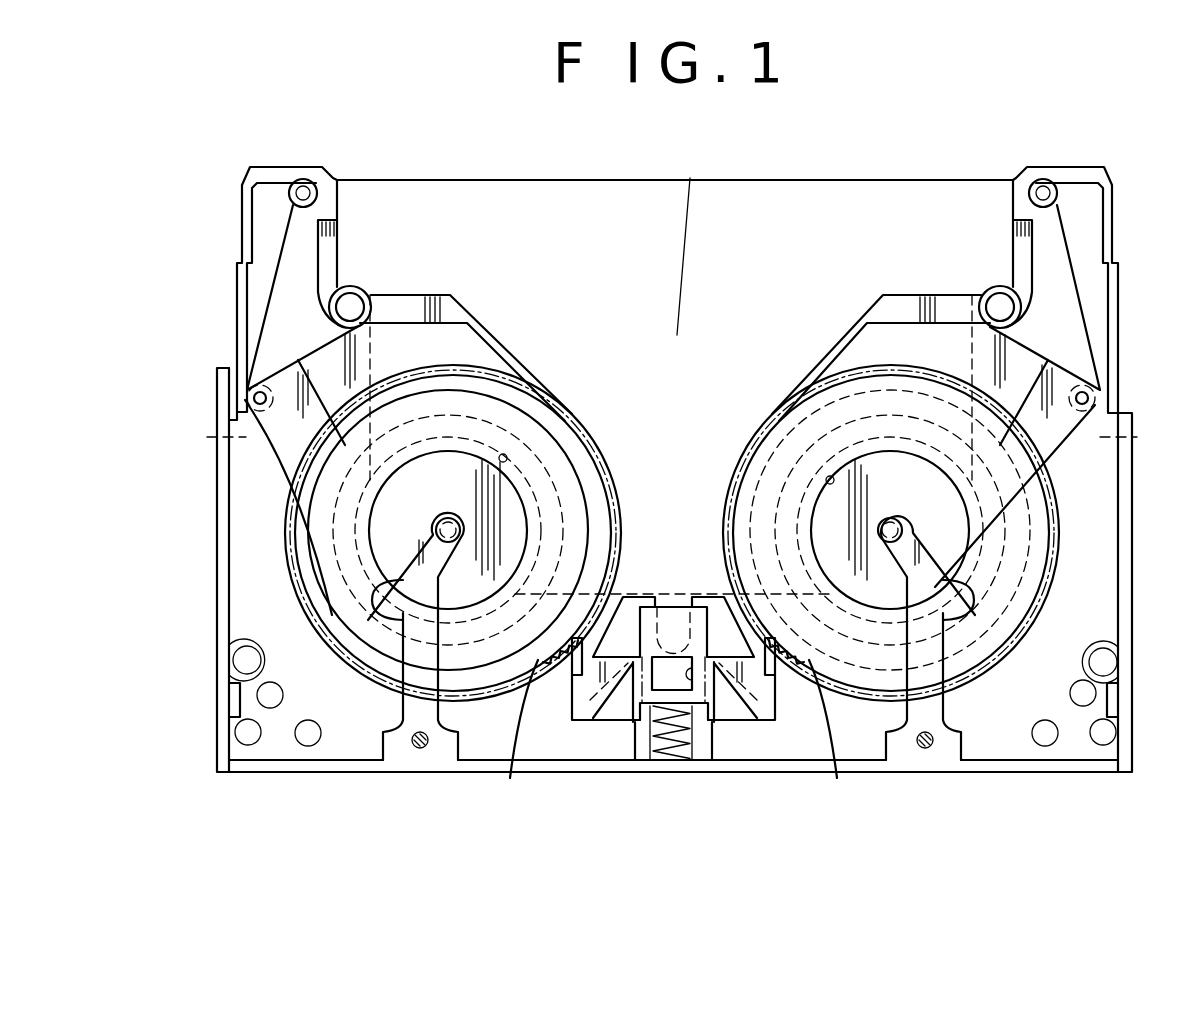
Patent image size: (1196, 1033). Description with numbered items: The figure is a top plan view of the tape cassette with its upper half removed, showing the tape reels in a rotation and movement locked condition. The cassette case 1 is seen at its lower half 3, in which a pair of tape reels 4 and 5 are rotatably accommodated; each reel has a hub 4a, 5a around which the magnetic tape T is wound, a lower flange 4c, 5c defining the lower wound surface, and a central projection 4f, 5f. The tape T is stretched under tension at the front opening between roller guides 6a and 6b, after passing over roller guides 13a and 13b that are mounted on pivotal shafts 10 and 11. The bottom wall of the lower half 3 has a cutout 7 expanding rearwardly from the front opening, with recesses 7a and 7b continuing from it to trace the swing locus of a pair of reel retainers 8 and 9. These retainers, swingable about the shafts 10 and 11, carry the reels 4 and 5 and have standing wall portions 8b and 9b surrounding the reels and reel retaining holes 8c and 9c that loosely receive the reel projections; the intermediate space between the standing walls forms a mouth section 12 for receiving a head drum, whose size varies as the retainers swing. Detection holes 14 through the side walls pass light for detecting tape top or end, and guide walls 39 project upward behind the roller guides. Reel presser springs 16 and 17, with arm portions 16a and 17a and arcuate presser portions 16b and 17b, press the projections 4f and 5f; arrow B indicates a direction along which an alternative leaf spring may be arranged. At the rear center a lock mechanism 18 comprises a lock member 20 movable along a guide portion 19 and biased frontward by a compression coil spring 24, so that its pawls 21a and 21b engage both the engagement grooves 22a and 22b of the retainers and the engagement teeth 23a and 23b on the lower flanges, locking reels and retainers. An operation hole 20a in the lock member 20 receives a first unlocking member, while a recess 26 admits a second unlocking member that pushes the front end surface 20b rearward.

The cassette case 1 is at (1103, 772).
The lower half 3 is at (300, 773).
The tape reel 4 is at (300, 577).
The hub 4a is at (297, 490).
The lower flange 4c is at (327, 613).
The central projection 4f is at (433, 532).
The tape reel 5 is at (1040, 580).
The hub 5a is at (990, 478).
The lower flange 5c is at (1010, 607).
The central projection 5f is at (905, 532).
The roller guide 6a is at (303, 180).
The roller guide 6b is at (1043, 180).
The cutout 7 is at (372, 347).
The recess 7a is at (478, 648).
The recess 7b is at (868, 615).
The reel retainer 8 is at (578, 405).
The standing wall portion 8b is at (490, 330).
The reel retaining hole 8c is at (505, 455).
The reel retainer 9 is at (762, 410).
The standing wall portion 9b is at (862, 320).
The reel retaining hole 9c is at (830, 478).
The pivotal shaft 10 is at (250, 397).
The pivotal shaft 11 is at (1090, 397).
The mouth section 12 is at (691, 241).
The roller guide 13a is at (203, 437).
The roller guide 13b is at (1141, 437).
The detection holes 14 is at (236, 334).
The reel presser spring 16 is at (410, 655).
The arm portion 16a is at (383, 680).
The presser portion 16b is at (417, 559).
The reel presser spring 17 is at (945, 648).
The arm portion 17a is at (960, 652).
The presser portion 17b is at (1013, 557).
The lock mechanism 18 is at (670, 776).
The guide portion 19 is at (645, 745).
The lock member 20 is at (608, 727).
The operation hole 20a is at (730, 727).
The front end surface 20b is at (665, 607).
The pawl 21a is at (572, 660).
The pawl 21b is at (775, 660).
The engagement groove 22a is at (541, 633).
The engagement groove 22b is at (803, 636).
The engagement teeth 23a is at (505, 734).
The engagement teeth 23b is at (845, 733).
The compression coil spring 24 is at (680, 733).
The recess 26 is at (685, 605).
The guide walls 39 is at (337, 235).
The arrow B is at (437, 607).
The magnetic tape T is at (537, 178).